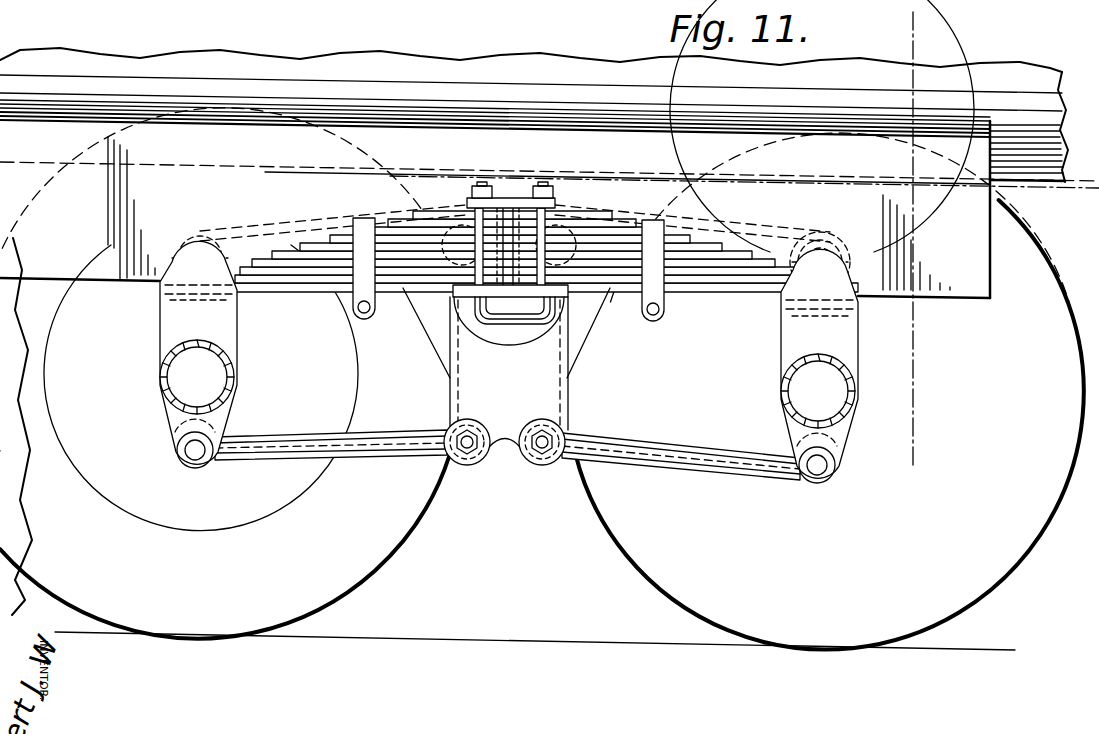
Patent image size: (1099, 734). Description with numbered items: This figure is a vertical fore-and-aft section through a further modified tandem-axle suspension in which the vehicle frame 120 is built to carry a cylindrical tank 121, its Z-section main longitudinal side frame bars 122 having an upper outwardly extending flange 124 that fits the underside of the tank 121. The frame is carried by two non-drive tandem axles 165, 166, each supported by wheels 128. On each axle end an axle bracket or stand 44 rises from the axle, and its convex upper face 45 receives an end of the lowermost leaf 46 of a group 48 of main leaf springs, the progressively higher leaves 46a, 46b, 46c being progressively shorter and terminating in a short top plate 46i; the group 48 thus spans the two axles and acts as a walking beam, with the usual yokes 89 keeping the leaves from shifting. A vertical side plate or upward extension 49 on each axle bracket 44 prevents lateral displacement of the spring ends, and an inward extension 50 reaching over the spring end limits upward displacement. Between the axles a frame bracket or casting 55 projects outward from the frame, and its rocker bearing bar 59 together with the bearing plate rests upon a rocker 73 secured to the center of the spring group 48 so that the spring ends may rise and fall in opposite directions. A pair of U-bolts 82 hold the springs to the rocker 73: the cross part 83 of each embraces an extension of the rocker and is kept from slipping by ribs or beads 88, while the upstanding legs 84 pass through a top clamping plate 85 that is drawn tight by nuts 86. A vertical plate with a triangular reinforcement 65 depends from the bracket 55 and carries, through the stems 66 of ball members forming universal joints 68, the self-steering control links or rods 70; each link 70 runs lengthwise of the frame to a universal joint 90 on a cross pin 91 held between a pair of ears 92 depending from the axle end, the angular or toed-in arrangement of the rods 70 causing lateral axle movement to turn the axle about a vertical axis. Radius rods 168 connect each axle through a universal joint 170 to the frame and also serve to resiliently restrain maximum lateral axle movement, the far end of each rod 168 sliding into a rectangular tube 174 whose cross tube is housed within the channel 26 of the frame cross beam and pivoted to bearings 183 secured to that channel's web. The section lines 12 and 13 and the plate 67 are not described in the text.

The section line 12- 12 is at (277, 200).
The section line 13- 13 is at (882, 28).
The channel 26 is at (470, 192).
The axle bracket or stand 44 is at (158, 357).
The upper face of axle bracket 45 is at (222, 302).
The lowermost leaf 46 is at (252, 293).
The spring leaf 46a is at (282, 293).
The spring leaf 46b is at (248, 276).
The spring leaf 46c is at (316, 293).
The top plate 46i is at (580, 214).
The group of main leaf springs 48 is at (688, 236).
The vertical side plate or upward extension 49 is at (160, 292).
The inward extension 50 is at (203, 236).
The frame bracket or casting 55 is at (470, 345).
The rocker bearing bar 59 is at (453, 297).
The triangular reinforcement 65 is at (509, 333).
The stem of ball member 66 is at (537, 436).
The bracket web 67 is at (515, 382).
The universal joint 68 is at (468, 467).
The self-steering control link or rod 70 is at (392, 460).
The rocker 73 is at (556, 318).
The U-bolt 82 is at (486, 182).
The cross part of U-bolt 83 is at (534, 326).
The upstanding legs of U-bolt 84 is at (546, 222).
The top clamping plate 85 is at (514, 206).
The nut 86 is at (550, 184).
The rib or bead 88 is at (508, 326).
The yoke 89 is at (362, 219).
The universal joint 90 is at (197, 472).
The cross pin 91 is at (202, 454).
The ear 92 is at (182, 460).
The vehicle frame 120 is at (992, 264).
The cylindrical tank 121 is at (1012, 76).
The main longitudinal side frame bar 122 is at (992, 290).
The upper outwardly extending flange 124 is at (530, 118).
The wheel 128 is at (385, 572).
The tandem axle 165 is at (234, 386).
The tandem axle 166 is at (781, 410).
The radius rod 168 is at (236, 236).
The universal joint 170 is at (852, 262).
The tube 174 is at (302, 229).
The bearing 183 is at (470, 226).